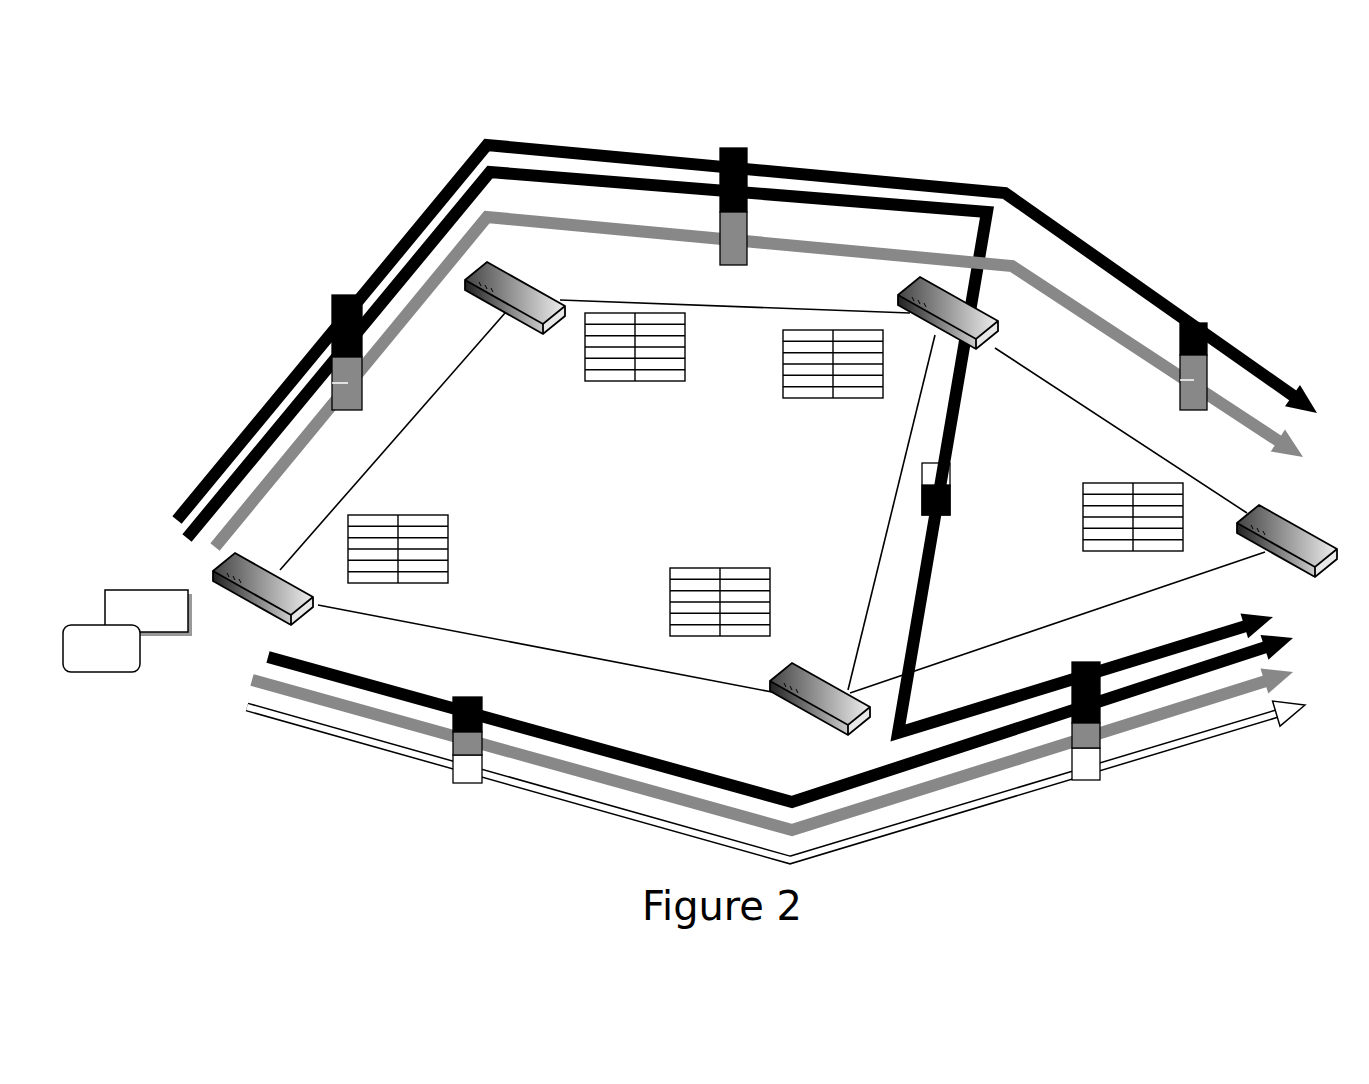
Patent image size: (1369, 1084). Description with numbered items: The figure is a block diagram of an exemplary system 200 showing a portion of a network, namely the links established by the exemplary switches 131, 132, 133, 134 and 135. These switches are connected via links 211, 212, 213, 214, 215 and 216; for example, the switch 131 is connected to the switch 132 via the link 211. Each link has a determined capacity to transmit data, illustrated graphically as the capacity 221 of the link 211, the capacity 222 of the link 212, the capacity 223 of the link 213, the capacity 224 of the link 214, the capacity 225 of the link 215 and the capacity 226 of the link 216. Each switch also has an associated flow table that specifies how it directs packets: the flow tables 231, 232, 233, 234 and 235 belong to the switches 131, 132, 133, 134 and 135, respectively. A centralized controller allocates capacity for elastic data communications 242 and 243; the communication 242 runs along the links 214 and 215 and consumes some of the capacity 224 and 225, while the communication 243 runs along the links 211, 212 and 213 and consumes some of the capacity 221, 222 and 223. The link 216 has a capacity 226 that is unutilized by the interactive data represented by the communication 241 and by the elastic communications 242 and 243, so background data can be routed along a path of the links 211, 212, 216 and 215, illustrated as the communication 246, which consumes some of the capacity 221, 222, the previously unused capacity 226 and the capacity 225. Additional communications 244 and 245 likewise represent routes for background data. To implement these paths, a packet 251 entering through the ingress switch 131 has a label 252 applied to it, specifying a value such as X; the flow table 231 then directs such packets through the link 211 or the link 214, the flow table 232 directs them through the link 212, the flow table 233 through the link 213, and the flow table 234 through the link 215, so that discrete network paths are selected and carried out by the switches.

The system 200 is at (184, 113).
The switch 131 is at (250, 556).
The switch 132 is at (525, 330).
The switch 133 is at (922, 326).
The switch 134 is at (787, 706).
The switch 135 is at (1298, 524).
The link 211 is at (405, 431).
The link 212 is at (612, 300).
The link 213 is at (1062, 397).
The link 214 is at (498, 635).
The link 215 is at (1033, 632).
The link 216 is at (868, 556).
The capacity 221 is at (326, 315).
The capacity 222 is at (762, 155).
The capacity 223 is at (1166, 380).
The capacity 224 is at (432, 771).
The capacity 225 is at (1118, 768).
The capacity 226 is at (961, 483).
The flow table 231 is at (448, 537).
The flow table 232 is at (585, 375).
The flow table 233 is at (783, 385).
The flow table 234 is at (668, 585).
The flow table 235 is at (1083, 530).
The communication 241 is at (567, 797).
The communication 242 is at (940, 783).
The communication 243 is at (575, 228).
The communication 244 is at (620, 737).
The communication 245 is at (1085, 242).
The communication 246 is at (968, 384).
The packet 251 is at (118, 590).
The label 252 is at (85, 672).